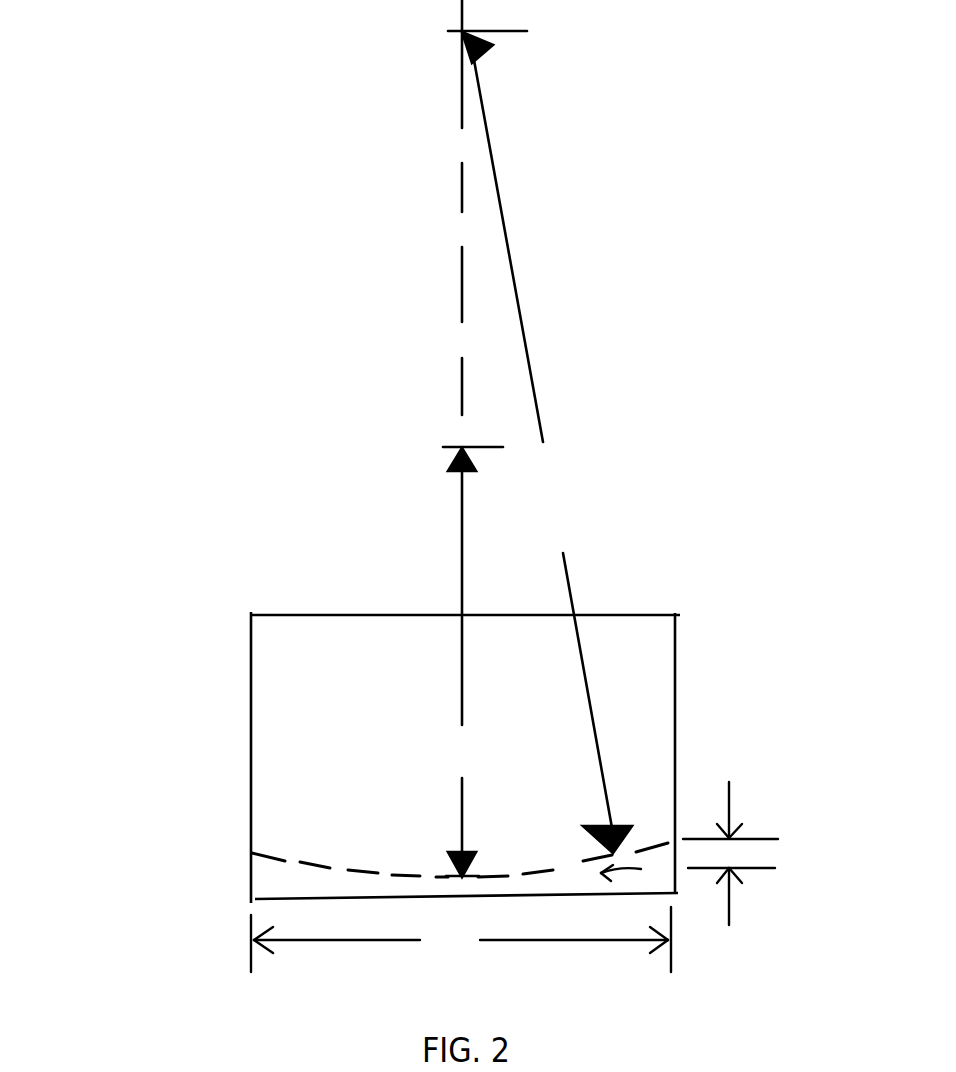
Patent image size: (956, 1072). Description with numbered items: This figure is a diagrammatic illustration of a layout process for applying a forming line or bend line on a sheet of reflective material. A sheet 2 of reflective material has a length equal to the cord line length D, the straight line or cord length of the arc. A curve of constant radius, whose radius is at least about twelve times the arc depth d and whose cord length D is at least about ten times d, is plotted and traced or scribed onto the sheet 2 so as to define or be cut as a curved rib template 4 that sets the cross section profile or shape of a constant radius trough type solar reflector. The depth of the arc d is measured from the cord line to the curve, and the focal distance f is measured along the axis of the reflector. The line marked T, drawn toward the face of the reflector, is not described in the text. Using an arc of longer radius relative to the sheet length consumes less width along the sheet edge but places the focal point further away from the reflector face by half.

The sheet 2 is at (334, 780).
The curved rib template 4 is at (276, 883).
The focal distance f is at (473, 662).
The incident ray T is at (566, 502).
The cord line length D is at (461, 939).
The depth of the arc d is at (730, 853).